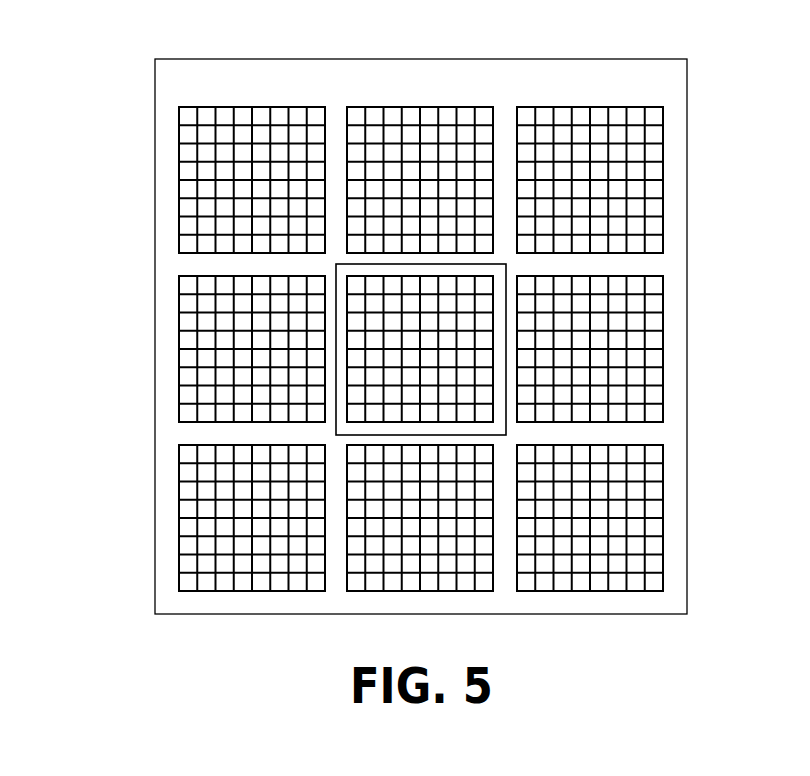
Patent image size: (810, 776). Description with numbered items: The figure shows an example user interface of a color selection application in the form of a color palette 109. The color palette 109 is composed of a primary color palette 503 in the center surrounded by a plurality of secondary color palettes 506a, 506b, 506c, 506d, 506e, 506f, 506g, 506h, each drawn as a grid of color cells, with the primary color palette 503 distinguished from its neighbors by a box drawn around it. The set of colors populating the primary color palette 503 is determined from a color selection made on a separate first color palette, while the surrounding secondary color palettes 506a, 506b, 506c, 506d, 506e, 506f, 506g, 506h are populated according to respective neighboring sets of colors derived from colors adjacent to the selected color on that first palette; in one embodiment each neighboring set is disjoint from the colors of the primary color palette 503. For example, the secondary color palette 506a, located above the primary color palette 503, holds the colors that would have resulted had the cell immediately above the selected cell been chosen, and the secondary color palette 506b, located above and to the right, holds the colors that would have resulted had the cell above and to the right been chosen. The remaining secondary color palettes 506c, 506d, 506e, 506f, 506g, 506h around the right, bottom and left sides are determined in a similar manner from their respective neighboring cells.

The color palette 109 is at (641, 87).
The primary color palette 503 is at (493, 268).
The secondary color palette 506a is at (458, 108).
The secondary color palette 506b is at (664, 175).
The secondary color palette 506c is at (664, 343).
The secondary color palette 506d is at (663, 512).
The secondary color palette 506e is at (458, 591).
The secondary color palette 506f is at (180, 520).
The secondary color palette 506g is at (180, 362).
The secondary color palette 506h is at (180, 177).